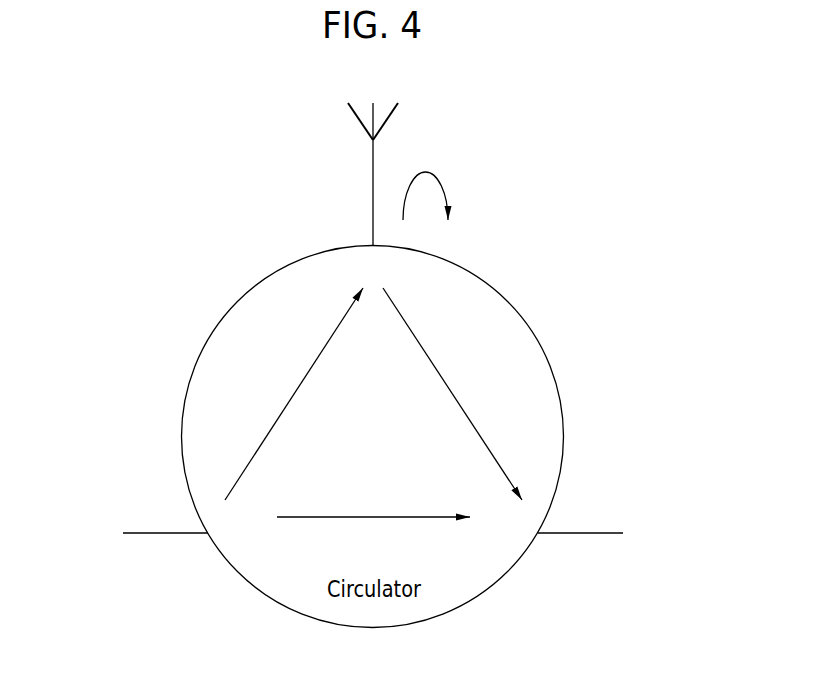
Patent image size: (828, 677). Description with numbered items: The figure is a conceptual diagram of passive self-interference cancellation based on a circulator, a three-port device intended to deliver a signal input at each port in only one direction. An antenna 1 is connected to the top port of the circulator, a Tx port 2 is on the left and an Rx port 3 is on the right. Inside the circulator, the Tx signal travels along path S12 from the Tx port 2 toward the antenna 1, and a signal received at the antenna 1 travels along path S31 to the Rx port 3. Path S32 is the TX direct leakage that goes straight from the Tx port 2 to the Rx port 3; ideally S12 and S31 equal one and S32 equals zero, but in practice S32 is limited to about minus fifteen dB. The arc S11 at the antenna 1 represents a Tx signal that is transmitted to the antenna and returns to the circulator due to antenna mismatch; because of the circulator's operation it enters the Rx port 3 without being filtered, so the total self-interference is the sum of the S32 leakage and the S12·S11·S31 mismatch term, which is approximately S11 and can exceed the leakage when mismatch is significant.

The antenna 1 is at (327, 174).
The transmitter (TX) port 2 is at (142, 529).
The receiver (RX) port 3 is at (603, 527).
The antenna mismatch SI signal S11 is at (457, 196).
The Tx-to-antenna transmission parameter S12 is at (294, 394).
The antenna-to-Rx transmission parameter S31 is at (452, 394).
The TX direct leakage signal S32 is at (373, 498).